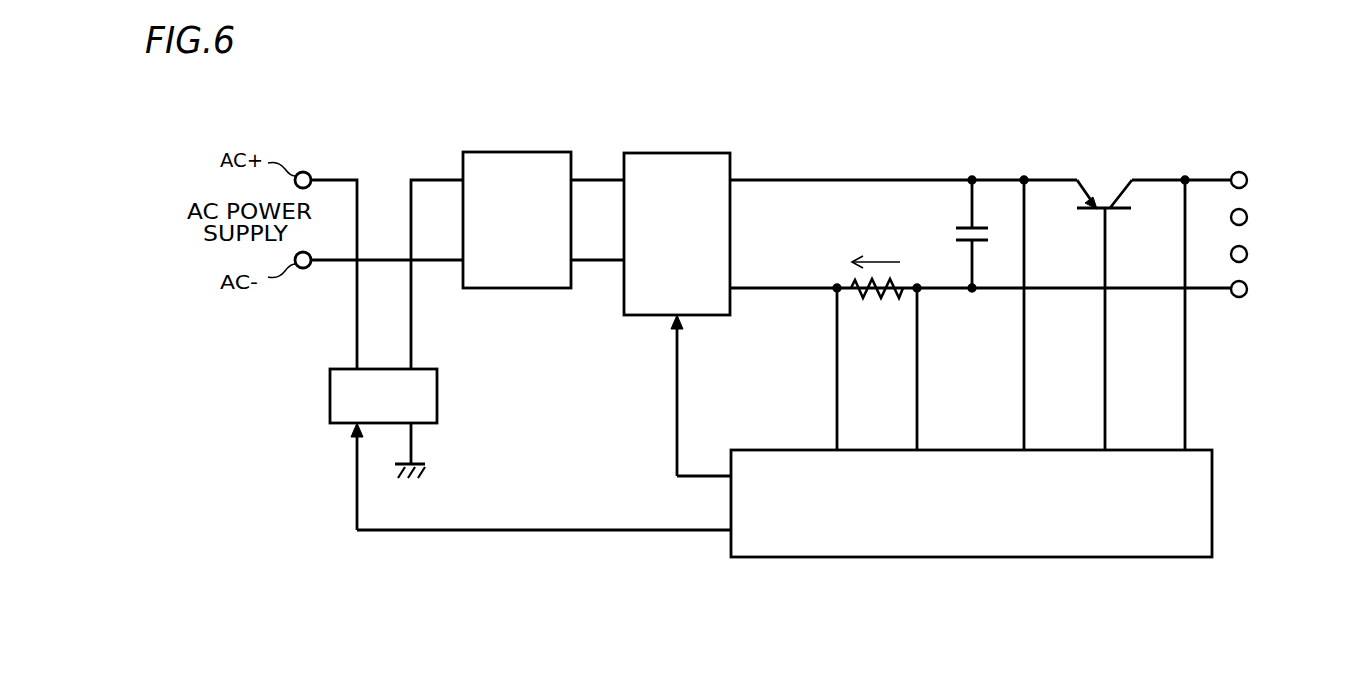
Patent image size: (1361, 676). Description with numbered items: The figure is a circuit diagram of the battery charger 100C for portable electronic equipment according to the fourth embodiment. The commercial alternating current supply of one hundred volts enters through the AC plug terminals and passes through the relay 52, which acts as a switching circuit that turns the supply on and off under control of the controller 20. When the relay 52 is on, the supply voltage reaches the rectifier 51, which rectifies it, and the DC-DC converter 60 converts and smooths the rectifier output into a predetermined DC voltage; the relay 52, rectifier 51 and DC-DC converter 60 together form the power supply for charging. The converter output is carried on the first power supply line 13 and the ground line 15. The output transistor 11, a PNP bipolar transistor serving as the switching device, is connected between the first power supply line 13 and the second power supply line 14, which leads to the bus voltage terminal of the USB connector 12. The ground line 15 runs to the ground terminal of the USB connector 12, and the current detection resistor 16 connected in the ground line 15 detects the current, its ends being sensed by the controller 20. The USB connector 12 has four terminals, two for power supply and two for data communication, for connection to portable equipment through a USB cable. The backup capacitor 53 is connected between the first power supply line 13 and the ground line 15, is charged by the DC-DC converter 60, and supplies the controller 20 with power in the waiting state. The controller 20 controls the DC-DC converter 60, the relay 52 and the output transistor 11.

The rectifier 51 is at (516, 152).
The DC-DC converter 60 is at (674, 152).
The first power supply line 13 is at (885, 178).
The ground line 15 is at (1154, 287).
The backup capacitor 53 is at (955, 232).
The current detection resistor 16 is at (877, 300).
The battery charger 100C is at (945, 127).
The output transistor 11 is at (1104, 177).
The second power supply line 14 is at (1157, 177).
The USB connector 12 is at (1273, 145).
The relay 52 is at (437, 396).
The controller 20 is at (1212, 483).